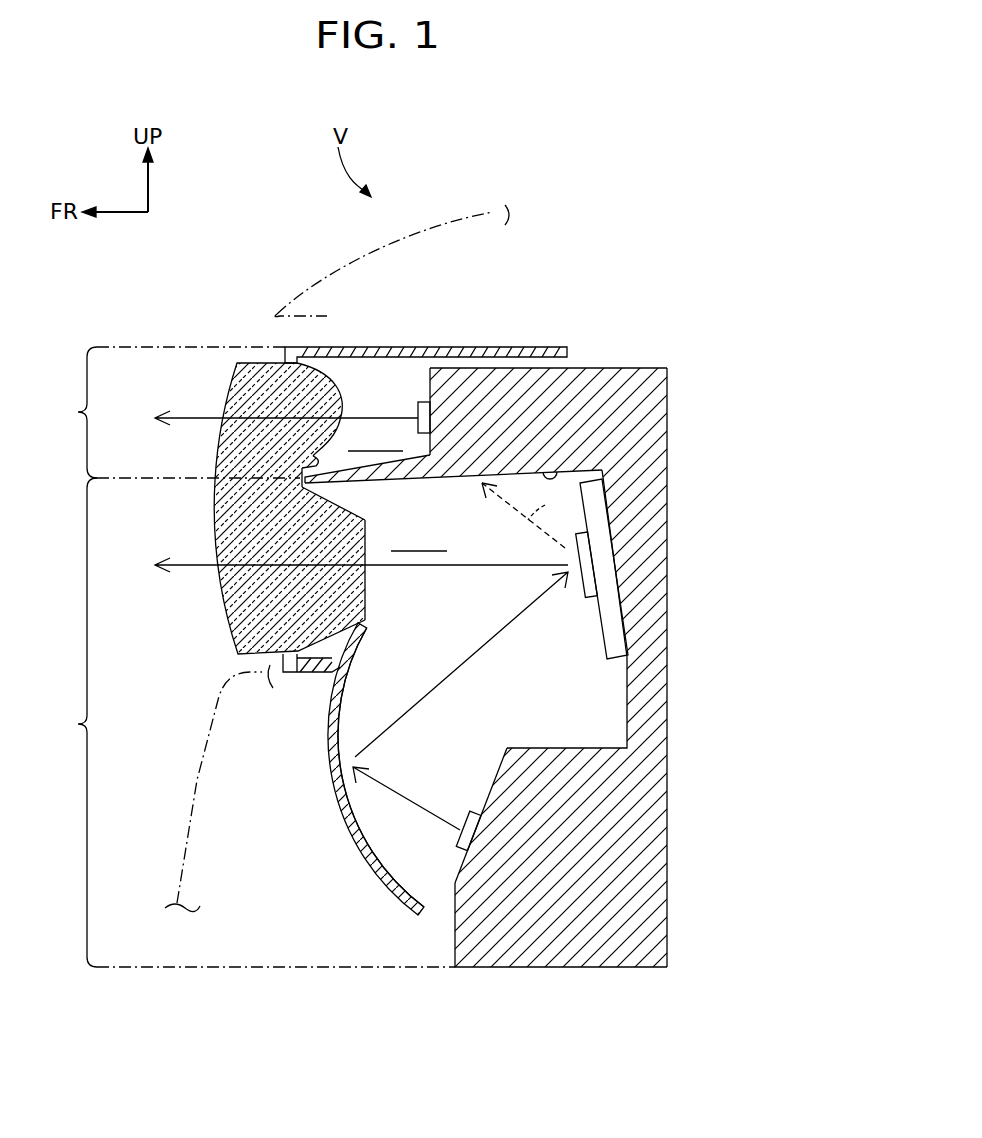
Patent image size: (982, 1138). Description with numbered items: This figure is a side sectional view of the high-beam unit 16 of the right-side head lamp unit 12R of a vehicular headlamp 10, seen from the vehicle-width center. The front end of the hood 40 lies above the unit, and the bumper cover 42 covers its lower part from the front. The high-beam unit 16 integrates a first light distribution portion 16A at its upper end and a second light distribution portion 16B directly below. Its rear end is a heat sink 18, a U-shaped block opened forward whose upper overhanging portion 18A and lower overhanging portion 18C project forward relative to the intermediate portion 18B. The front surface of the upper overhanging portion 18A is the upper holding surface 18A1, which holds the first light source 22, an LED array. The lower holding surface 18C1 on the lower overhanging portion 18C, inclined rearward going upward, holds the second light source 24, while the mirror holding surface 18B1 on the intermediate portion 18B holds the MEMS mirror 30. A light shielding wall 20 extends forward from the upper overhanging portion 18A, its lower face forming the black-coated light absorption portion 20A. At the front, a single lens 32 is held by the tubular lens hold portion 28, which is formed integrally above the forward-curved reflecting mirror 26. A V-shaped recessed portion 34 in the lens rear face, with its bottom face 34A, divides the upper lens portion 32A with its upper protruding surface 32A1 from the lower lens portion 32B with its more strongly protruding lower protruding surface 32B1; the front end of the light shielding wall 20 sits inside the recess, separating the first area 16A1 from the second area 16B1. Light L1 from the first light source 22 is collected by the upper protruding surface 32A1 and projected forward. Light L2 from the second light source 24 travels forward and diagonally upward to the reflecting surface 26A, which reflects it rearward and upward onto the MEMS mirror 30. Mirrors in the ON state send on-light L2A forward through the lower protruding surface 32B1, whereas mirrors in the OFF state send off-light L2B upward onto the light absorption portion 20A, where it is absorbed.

The vehicular headlamp 10 is at (276, 657).
The head lamp unit 12R is at (184, 310).
The high-beam unit 16 is at (66, 657).
The first light distribution portion 16A is at (66, 412).
The second light distribution portion 16B is at (66, 722).
The first area 16A1 is at (377, 438).
The second area 16B1 is at (420, 538).
The heat sink 18 is at (661, 360).
The upper overhanging portion 18A is at (577, 377).
The upper holding surface 18A1 is at (430, 388).
The intermediate portion 18B is at (655, 567).
The mirror holding surface 18B1 is at (604, 512).
The lower overhanging portion 18C is at (655, 937).
The lower holding surface 18C1 is at (505, 752).
The light shielding wall 20 is at (423, 470).
The light absorption portion 20A is at (578, 465).
The first light source 22 is at (418, 414).
The second light source 24 is at (463, 818).
The reflecting mirror 26 is at (345, 845).
The reflecting surface 26A is at (341, 690).
The lens hold portion 28 is at (465, 345).
The MEMS mirror 30 is at (578, 594).
The lens 32 is at (222, 641).
The upper lens portion 32A is at (235, 402).
The upper protruding surface 32A1 is at (340, 395).
The lower lens portion 32B is at (231, 594).
The lower protruding surface 32B1 is at (367, 585).
The recessed portion 34 is at (313, 460).
The bottom face 34A is at (303, 486).
The hood 40 is at (468, 210).
The bumper cover 42 is at (188, 777).
The light L1 is at (268, 417).
The light L2 is at (448, 681).
The on-light L2A is at (511, 515).
The off-light L2B is at (549, 500).